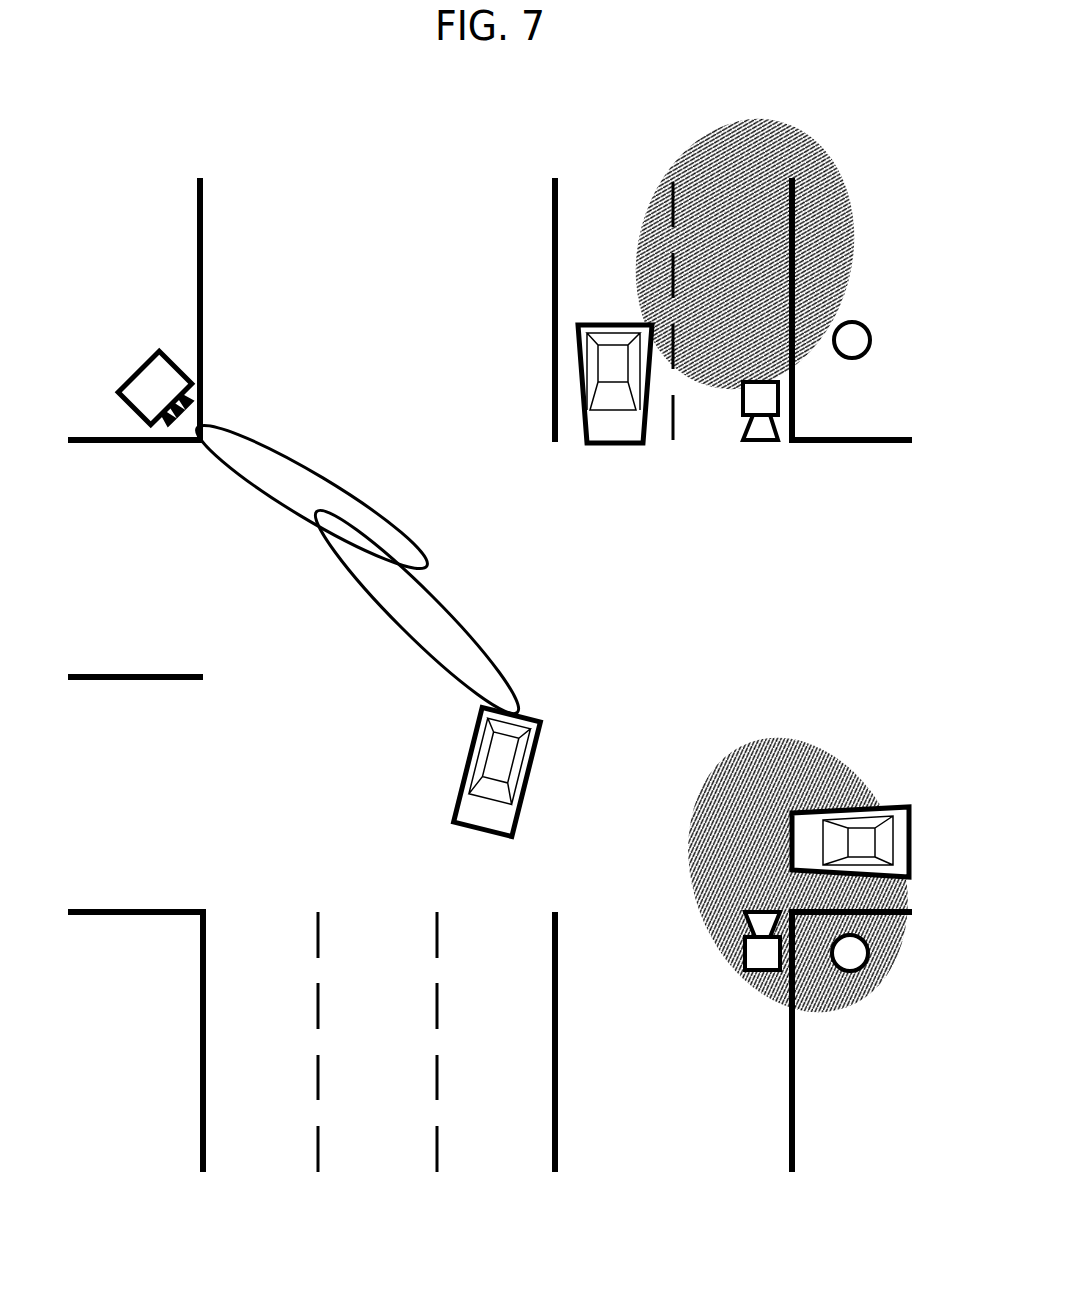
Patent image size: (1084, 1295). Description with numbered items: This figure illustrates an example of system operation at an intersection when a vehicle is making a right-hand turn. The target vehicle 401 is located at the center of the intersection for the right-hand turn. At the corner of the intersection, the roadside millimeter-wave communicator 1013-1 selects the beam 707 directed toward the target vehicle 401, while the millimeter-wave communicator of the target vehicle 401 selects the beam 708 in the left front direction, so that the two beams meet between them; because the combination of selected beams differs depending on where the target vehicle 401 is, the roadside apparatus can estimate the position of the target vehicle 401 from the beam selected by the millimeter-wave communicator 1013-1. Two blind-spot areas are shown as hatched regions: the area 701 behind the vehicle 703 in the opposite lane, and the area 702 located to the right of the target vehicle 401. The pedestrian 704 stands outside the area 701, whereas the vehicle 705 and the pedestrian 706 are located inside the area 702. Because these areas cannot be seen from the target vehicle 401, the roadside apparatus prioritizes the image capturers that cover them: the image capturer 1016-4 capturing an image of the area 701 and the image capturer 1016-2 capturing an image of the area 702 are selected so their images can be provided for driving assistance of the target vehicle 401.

The target vehicle 401 is at (473, 832).
The area 701 is at (843, 236).
The area 702 is at (768, 762).
The vehicle 703 is at (578, 322).
The pedestrian 704 is at (853, 343).
The vehicle 705 is at (882, 805).
The pedestrian 706 is at (853, 963).
The beam 707 is at (292, 473).
The beam 708 is at (457, 640).
The millimeter-wave communicator 1013-1 is at (133, 368).
The image capturer 1016-2 is at (763, 443).
The image capturer 1016-4 is at (747, 972).